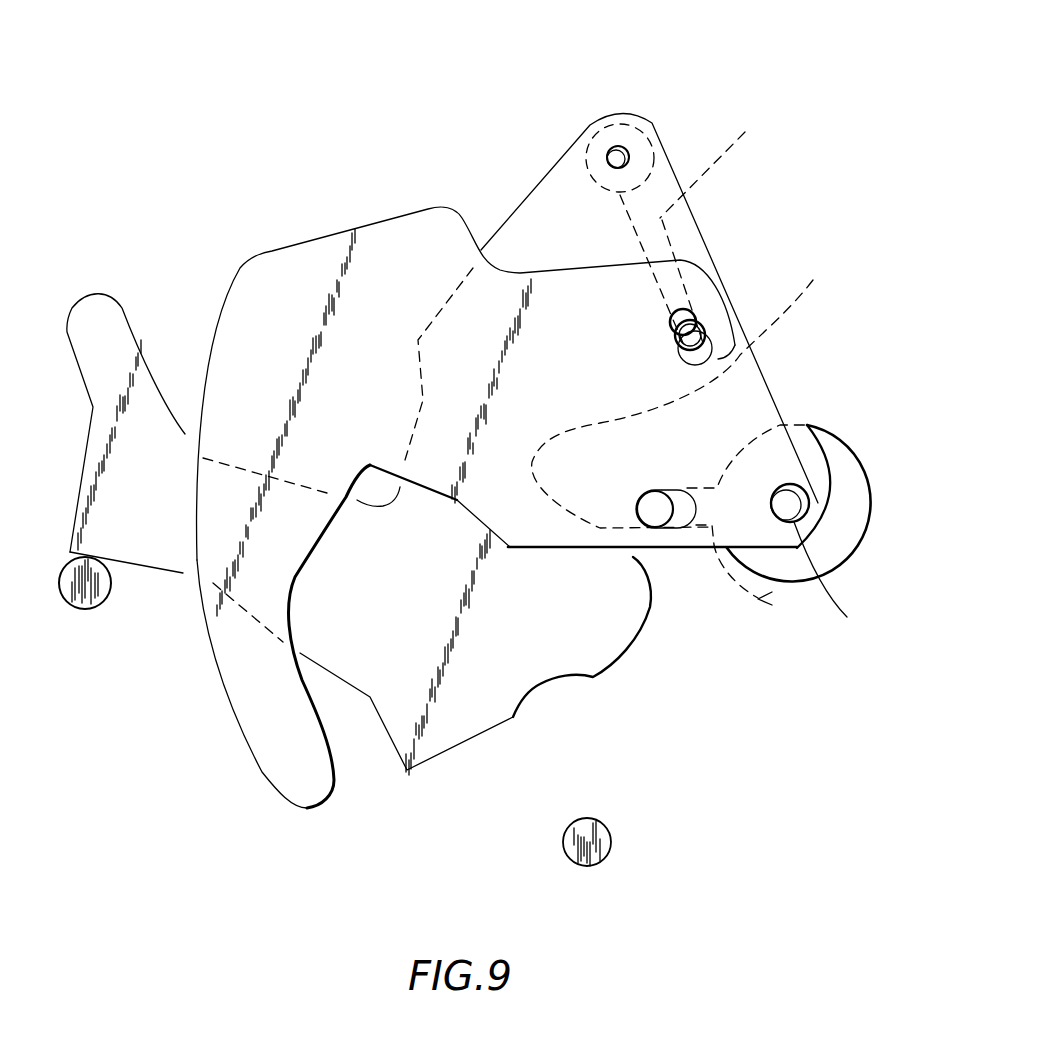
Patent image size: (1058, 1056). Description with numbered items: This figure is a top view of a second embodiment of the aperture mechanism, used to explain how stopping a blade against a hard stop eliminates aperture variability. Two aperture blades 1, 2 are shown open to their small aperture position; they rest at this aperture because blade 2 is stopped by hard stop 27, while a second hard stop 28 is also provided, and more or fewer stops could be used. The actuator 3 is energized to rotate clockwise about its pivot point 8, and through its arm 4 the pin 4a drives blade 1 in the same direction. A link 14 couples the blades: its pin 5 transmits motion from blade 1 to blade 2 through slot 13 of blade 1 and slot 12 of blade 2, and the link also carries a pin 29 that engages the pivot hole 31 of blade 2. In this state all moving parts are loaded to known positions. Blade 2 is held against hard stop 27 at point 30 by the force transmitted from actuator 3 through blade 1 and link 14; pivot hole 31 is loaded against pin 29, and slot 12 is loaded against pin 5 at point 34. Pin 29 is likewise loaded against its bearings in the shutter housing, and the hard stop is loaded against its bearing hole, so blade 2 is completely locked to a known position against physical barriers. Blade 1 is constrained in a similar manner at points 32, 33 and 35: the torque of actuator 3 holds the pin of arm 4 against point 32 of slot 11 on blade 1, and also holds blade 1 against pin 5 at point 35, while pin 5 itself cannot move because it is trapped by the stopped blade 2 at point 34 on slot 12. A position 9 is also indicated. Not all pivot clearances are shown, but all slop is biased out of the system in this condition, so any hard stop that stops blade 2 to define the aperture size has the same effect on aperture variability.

The aperture blade 1 is at (358, 228).
The aperture blade 2 is at (100, 292).
The actuator 3 is at (829, 433).
The arm 4 is at (737, 569).
The pin 4a is at (655, 522).
The pin 5 is at (688, 318).
The pivot point 8 is at (793, 503).
The position 9 is at (620, 155).
The slot 11 is at (680, 530).
The slot 12 is at (712, 360).
The slot 13 is at (806, 286).
The link 14 is at (758, 128).
The hard stop 27 is at (83, 590).
The hard stop 28 is at (603, 862).
The pin 29 is at (632, 160).
The point 30 is at (80, 560).
The pivot hole 31 is at (616, 143).
The point 32 is at (648, 493).
The point 33 is at (847, 617).
The point 34 is at (706, 320).
The point 35 is at (678, 350).